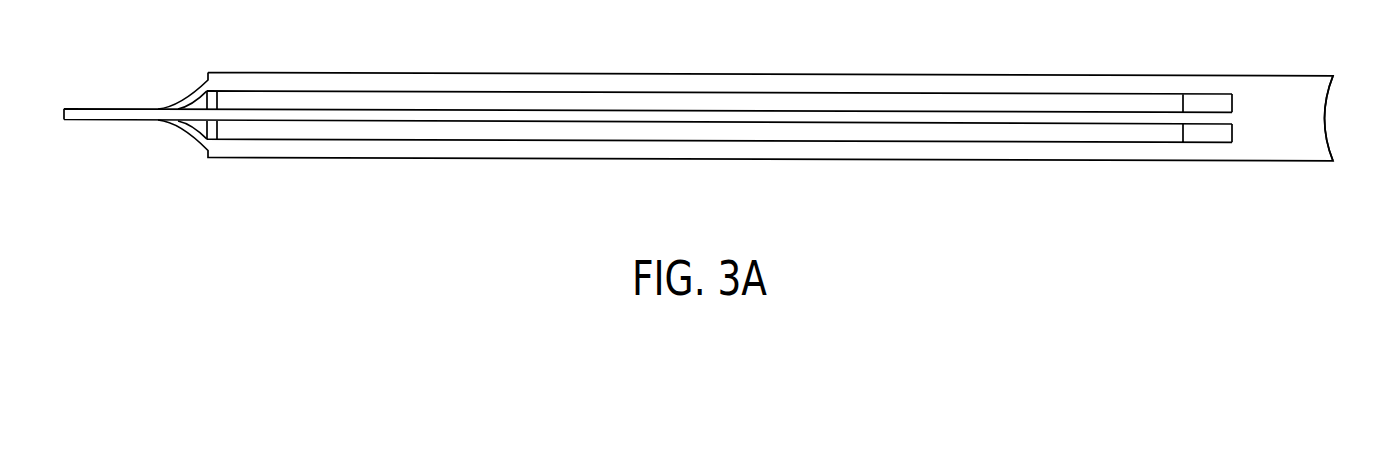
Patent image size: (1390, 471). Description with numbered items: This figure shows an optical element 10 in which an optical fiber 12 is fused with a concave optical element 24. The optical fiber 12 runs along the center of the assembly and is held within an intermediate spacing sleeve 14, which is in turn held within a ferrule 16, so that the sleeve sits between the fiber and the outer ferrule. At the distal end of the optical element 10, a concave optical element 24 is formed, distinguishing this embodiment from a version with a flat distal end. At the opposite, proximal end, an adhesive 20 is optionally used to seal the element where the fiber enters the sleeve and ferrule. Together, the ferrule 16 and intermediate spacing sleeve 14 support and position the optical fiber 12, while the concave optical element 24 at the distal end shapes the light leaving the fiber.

The optical element 10 is at (721, 139).
The optical fiber 12 is at (817, 118).
The intermediate spacing sleeve 14 is at (585, 92).
The ferrule 16 is at (358, 72).
The adhesive 20 is at (187, 101).
The concave optical element 24 is at (1322, 119).